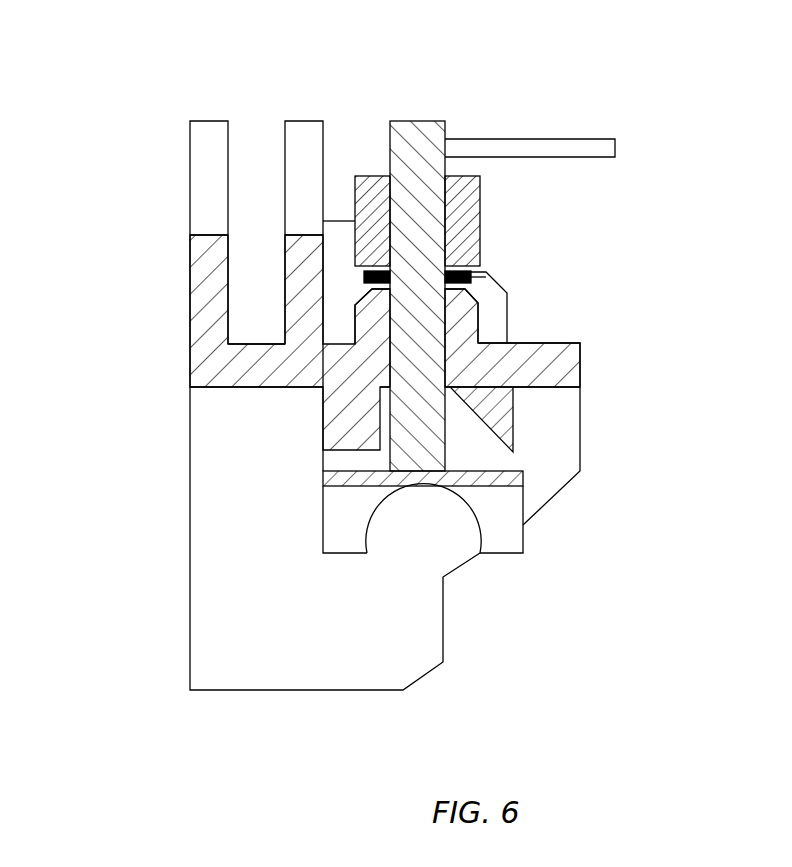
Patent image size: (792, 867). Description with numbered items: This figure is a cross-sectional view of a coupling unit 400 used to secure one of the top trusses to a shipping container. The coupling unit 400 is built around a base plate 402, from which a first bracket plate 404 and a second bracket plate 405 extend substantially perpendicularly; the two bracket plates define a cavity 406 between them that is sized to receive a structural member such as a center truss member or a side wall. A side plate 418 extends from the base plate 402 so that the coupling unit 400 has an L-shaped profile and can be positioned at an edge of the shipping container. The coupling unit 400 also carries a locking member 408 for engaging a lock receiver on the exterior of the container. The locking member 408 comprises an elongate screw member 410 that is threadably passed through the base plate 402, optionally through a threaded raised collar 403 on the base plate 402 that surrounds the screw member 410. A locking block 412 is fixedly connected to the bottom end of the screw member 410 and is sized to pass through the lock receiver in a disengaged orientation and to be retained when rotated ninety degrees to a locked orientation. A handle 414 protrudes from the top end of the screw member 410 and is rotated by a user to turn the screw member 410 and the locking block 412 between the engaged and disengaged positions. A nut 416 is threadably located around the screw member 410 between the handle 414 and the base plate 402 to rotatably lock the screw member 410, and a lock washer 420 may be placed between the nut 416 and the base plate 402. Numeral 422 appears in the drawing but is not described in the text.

The coupling unit 400 is at (615, 95).
The base plate 402 is at (567, 338).
The threaded raised collar 403 is at (478, 310).
The first bracket plate 404 is at (190, 181).
The second bracket plate 405 is at (323, 148).
The cavity 406 is at (244, 102).
The locking member 408 is at (412, 121).
The screw member 410 is at (390, 454).
The locking block 412 is at (523, 503).
The handle 414 is at (580, 157).
The nut 416 is at (480, 204).
The side plate 418 is at (237, 611).
The lock washer 420 is at (486, 277).
The ramp surface 422 is at (513, 412).